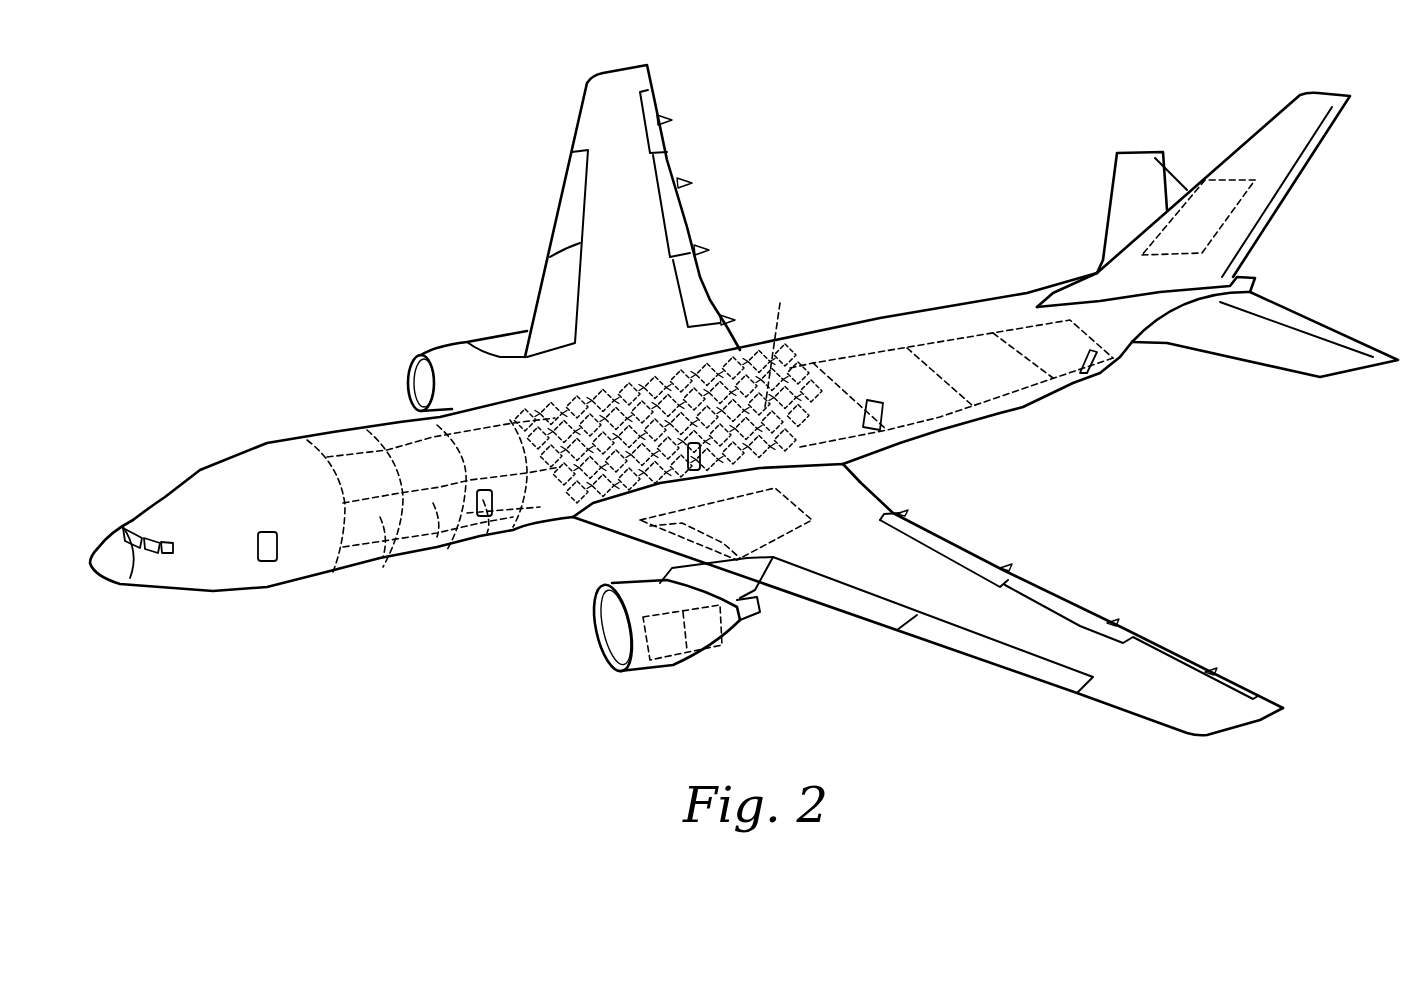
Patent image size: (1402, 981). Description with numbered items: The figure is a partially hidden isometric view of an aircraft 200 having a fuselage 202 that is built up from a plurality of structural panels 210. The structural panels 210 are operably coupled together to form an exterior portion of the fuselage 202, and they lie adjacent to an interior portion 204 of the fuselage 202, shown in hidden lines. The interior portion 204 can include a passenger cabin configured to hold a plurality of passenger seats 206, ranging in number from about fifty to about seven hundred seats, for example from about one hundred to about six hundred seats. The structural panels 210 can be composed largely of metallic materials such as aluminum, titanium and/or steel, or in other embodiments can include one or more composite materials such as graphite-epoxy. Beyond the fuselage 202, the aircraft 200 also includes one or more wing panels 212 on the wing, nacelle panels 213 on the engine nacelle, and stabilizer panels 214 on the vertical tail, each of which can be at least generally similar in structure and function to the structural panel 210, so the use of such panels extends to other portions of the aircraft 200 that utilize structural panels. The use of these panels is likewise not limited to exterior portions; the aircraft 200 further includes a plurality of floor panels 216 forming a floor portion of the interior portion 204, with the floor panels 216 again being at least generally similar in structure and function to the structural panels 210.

The aircraft 200 is at (307, 205).
The fuselage 202 is at (223, 462).
The interior portion 204 is at (475, 441).
The passenger seats 206 is at (658, 387).
The structural panels 210 is at (357, 567).
The wing panels 212 is at (648, 528).
The nacelle panels 213 is at (670, 640).
The stabilizer panels 214 is at (1210, 203).
The floor panels 216 is at (957, 425).